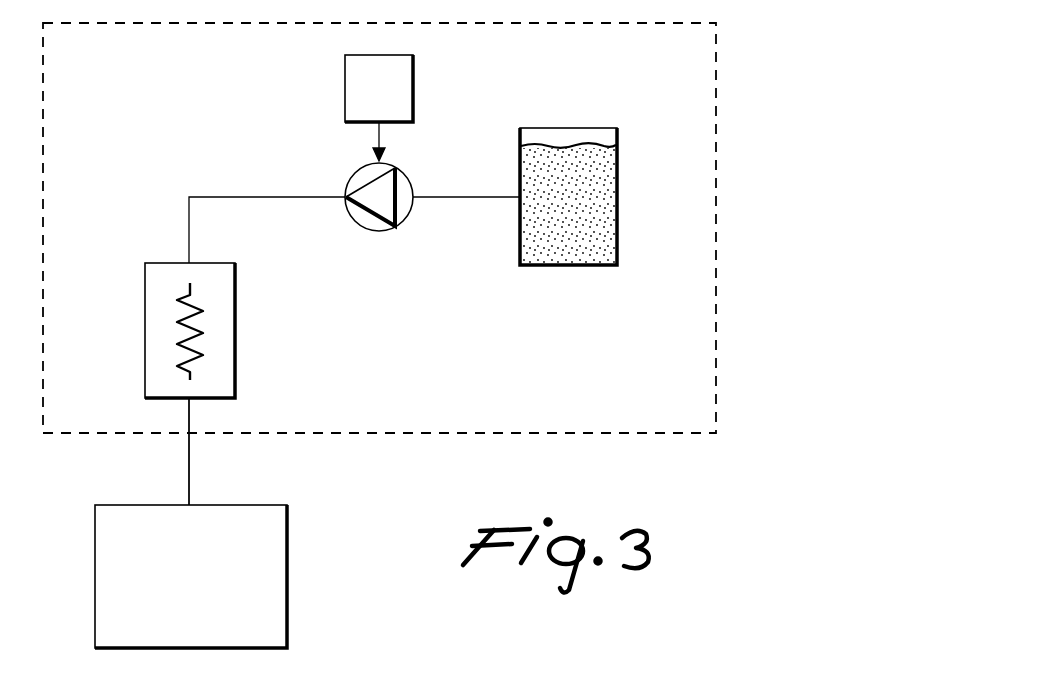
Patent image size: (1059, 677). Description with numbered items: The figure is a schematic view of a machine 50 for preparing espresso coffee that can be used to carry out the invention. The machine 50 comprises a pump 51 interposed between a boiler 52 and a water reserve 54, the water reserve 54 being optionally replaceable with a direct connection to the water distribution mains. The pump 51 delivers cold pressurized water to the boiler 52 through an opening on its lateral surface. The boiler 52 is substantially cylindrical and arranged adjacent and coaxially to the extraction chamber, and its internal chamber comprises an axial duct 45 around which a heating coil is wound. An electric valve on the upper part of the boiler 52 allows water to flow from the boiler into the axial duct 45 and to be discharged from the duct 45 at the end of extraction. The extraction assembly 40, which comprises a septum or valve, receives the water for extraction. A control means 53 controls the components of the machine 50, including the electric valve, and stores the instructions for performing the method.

The extraction assembly 40 is at (250, 563).
The duct 45 is at (190, 465).
The machine 50 is at (716, 98).
The pump 51 is at (412, 217).
The boiler 52 is at (215, 352).
The control means 53 is at (367, 90).
The water reserve 54 is at (572, 265).